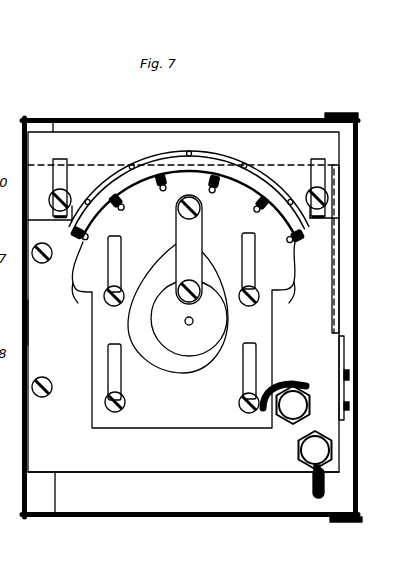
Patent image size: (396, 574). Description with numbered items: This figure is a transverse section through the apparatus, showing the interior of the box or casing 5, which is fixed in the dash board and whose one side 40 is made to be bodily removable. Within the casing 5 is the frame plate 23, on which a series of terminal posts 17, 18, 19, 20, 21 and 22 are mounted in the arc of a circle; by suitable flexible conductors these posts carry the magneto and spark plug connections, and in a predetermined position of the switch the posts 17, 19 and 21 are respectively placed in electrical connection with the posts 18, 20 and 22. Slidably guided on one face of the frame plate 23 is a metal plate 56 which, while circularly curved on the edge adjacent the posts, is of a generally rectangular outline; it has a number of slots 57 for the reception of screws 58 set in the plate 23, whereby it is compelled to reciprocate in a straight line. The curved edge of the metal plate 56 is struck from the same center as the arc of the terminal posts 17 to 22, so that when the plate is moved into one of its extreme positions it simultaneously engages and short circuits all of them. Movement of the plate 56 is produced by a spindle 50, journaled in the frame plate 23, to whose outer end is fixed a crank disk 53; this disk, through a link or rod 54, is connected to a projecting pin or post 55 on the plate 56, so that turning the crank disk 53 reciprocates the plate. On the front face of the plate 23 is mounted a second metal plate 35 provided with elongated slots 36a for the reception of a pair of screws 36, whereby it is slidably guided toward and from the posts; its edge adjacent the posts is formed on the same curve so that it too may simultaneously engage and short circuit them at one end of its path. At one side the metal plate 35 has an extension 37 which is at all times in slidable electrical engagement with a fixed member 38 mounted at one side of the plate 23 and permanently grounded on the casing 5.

The casing 5 is at (27, 322).
The terminal post 17 is at (297, 241).
The terminal post 18 is at (261, 206).
The terminal post 19 is at (219, 187).
The terminal post 20 is at (168, 184).
The terminal post 21 is at (121, 203).
The terminal post 22 is at (84, 234).
The frame plate 23 is at (150, 472).
The second metal plate 35 is at (272, 142).
The screws 36 is at (50, 205).
The elongated slots 36a is at (56, 172).
The extension 37 is at (340, 264).
The fixed member 38 is at (344, 350).
The removable side 40 is at (358, 224).
The spindle 50 is at (189, 318).
The crank disk 53 is at (166, 348).
The link 54 is at (200, 230).
The pin 55 is at (178, 211).
The metal plate 56 is at (190, 429).
The slots 57 is at (122, 250).
The screws 58 is at (112, 306).